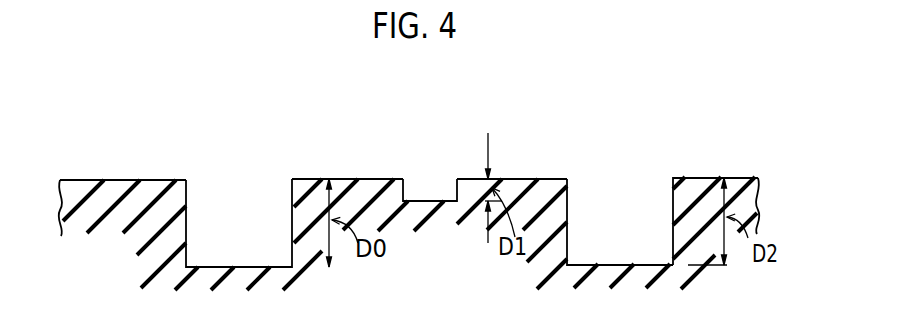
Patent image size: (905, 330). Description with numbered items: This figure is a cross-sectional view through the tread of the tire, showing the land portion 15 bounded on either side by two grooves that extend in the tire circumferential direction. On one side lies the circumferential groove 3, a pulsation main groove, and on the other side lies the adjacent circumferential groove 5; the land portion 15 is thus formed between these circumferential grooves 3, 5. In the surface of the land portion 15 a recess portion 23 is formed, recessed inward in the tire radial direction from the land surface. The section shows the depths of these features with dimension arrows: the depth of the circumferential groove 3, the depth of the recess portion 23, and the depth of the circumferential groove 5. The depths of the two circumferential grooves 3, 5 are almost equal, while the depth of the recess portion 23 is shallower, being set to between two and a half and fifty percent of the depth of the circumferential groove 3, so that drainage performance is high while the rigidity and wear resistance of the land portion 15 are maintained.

The circumferential groove 3 is at (189, 213).
The land portion 15 is at (362, 179).
The recess portion 23 is at (408, 184).
The circumferential groove 5 is at (569, 211).